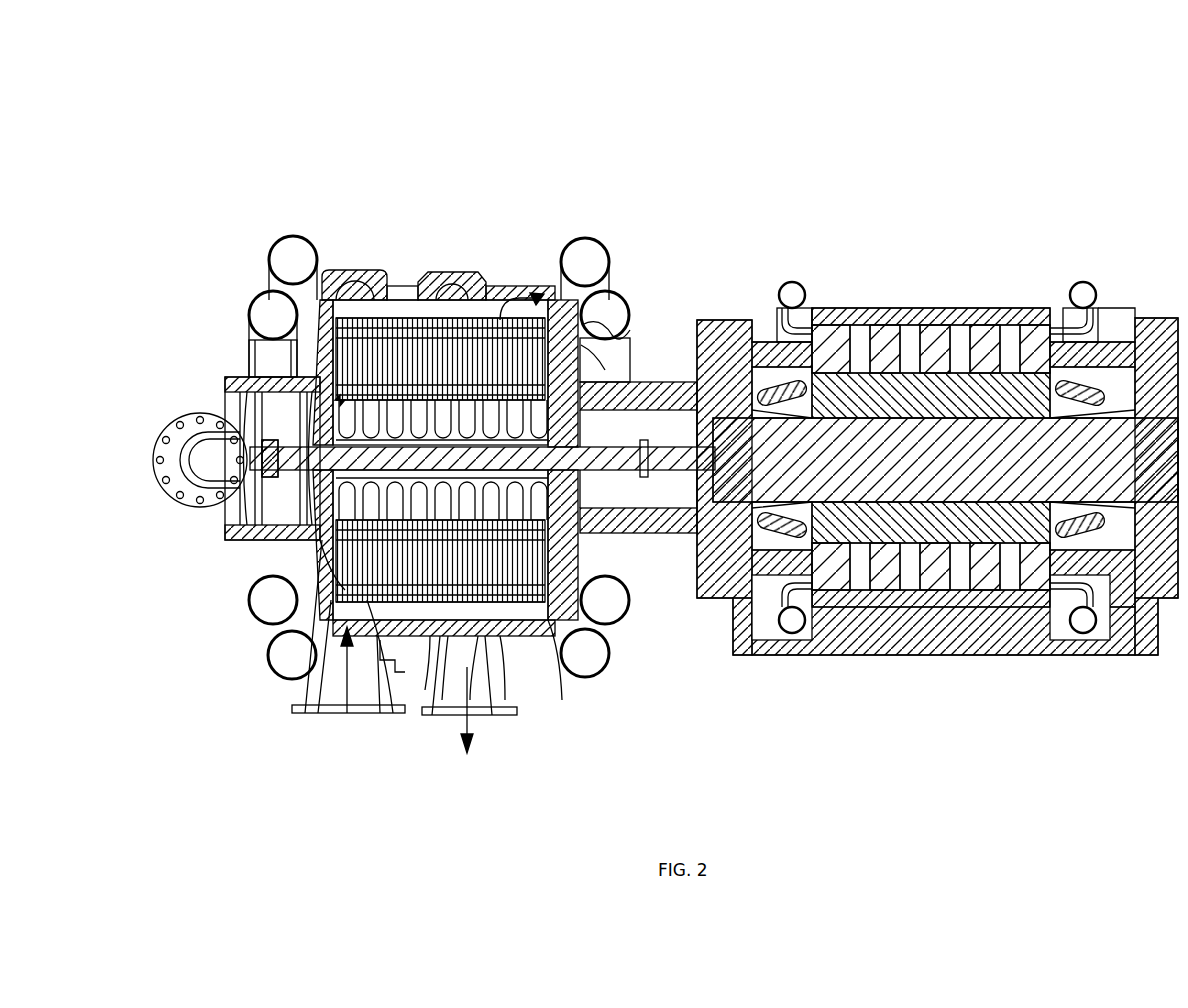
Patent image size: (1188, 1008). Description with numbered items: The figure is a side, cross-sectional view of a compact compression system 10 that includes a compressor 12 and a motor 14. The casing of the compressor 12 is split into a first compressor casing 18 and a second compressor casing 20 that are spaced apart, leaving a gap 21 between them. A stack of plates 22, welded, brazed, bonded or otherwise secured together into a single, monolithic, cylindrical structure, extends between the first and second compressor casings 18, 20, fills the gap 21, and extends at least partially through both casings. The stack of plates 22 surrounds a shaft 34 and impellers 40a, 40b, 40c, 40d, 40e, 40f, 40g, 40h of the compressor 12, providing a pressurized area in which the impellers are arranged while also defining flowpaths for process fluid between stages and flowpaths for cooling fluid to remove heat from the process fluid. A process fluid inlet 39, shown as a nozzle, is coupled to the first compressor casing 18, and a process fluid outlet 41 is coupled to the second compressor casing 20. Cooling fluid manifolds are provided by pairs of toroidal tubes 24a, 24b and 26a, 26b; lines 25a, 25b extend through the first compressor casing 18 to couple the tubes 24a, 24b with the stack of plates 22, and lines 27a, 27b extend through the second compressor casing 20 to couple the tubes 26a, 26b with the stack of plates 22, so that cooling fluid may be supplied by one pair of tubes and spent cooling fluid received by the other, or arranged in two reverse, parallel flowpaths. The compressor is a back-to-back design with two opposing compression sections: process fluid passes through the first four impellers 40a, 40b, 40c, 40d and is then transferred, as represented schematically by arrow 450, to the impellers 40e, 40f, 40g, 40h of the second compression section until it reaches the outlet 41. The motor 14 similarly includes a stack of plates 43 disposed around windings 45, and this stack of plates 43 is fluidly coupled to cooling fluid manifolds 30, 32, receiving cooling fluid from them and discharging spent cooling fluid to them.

The compact compression system 10 is at (892, 78).
The compressor 12 is at (416, 120).
The motor 14 is at (927, 230).
The first compressor casing 18 is at (346, 286).
The second compressor casing 20 is at (456, 275).
The gap 21 is at (404, 640).
The stack of plates 22 is at (404, 302).
The toroidal tube 24a is at (290, 236).
The toroidal tube 24b is at (250, 290).
The line 25a is at (302, 344).
The line 25b is at (303, 388).
The toroidal tube 26a is at (586, 238).
The toroidal tube 26b is at (620, 298).
The line 27a is at (612, 334).
The line 27b is at (590, 350).
The cooling fluid manifold 30 is at (792, 282).
The cooling fluid manifold 32 is at (1085, 282).
The shaft 34 is at (668, 445).
The process fluid inlet 39 is at (310, 712).
The impeller 40a is at (340, 495).
The impeller 40b is at (340, 535).
The impeller 40c is at (410, 560).
The impeller 40d is at (456, 636).
The impeller 40e is at (560, 545).
The impeller 40f is at (522, 590).
The impeller 40g is at (495, 620).
The impeller 40h is at (482, 600).
The process fluid outlet 41 is at (448, 715).
The stack of plates 43 is at (930, 325).
The windings 45 is at (972, 404).
The arrow 450 is at (497, 292).